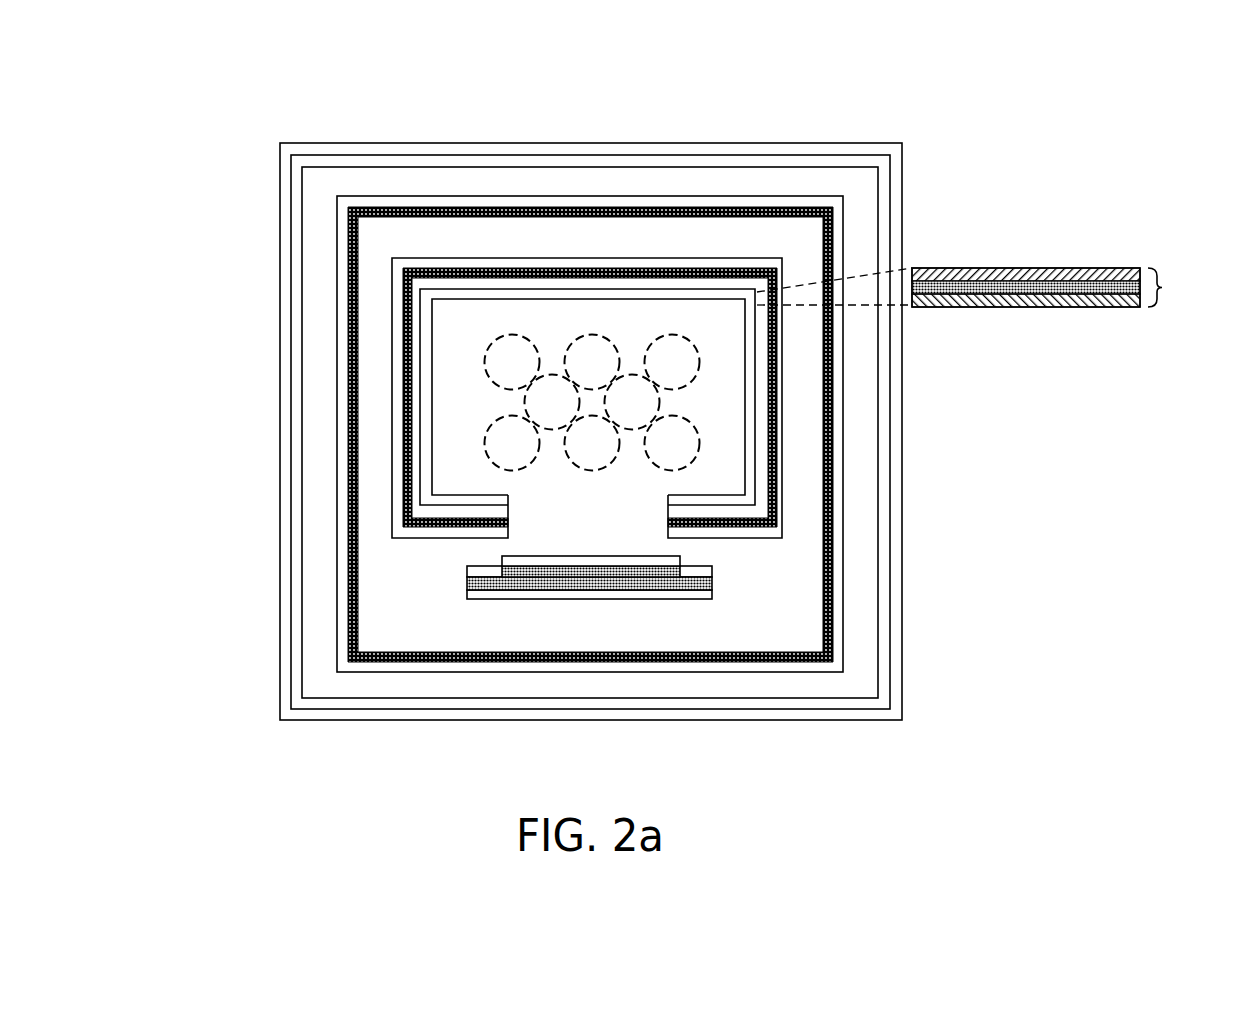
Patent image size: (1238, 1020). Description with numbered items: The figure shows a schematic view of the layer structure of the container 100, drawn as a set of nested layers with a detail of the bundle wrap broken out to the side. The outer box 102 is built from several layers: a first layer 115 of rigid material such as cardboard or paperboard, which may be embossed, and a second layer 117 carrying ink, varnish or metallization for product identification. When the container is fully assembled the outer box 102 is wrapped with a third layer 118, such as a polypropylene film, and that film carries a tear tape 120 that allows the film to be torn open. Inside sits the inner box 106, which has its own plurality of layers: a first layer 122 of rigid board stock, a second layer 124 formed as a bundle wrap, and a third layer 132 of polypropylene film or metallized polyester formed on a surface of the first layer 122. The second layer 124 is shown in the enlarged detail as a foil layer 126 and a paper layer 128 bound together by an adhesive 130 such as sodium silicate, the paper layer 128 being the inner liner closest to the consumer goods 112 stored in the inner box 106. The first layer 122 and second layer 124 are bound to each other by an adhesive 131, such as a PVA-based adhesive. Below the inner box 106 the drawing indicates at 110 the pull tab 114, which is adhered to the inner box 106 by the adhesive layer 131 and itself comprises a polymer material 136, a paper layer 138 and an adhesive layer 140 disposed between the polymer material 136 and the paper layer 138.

The container 100 is at (97, 221).
The outer box 102 is at (325, 402).
The inner box 106 is at (682, 323).
The substrate assembly 110 is at (601, 543).
The consumer goods 112 is at (592, 403).
The pull tab 114 is at (601, 553).
The first layer 115 is at (347, 478).
The second layer 117 is at (335, 613).
The third layer 118 is at (725, 713).
The tear tape 120 is at (852, 723).
The first layer 122 is at (462, 267).
The second layer 124 is at (812, 287).
The foil layer 126 is at (1027, 275).
The paper layer 128 is at (984, 300).
The adhesive 130 is at (1077, 298).
The adhesive 131 is at (727, 277).
The third layer 132 is at (562, 262).
The polymer material 136 is at (717, 595).
The paper layer 138 is at (628, 562).
The adhesive layer 140 is at (717, 582).